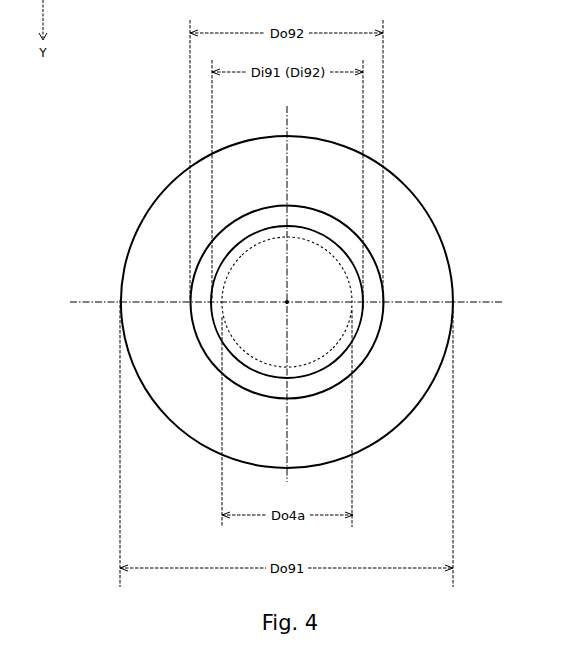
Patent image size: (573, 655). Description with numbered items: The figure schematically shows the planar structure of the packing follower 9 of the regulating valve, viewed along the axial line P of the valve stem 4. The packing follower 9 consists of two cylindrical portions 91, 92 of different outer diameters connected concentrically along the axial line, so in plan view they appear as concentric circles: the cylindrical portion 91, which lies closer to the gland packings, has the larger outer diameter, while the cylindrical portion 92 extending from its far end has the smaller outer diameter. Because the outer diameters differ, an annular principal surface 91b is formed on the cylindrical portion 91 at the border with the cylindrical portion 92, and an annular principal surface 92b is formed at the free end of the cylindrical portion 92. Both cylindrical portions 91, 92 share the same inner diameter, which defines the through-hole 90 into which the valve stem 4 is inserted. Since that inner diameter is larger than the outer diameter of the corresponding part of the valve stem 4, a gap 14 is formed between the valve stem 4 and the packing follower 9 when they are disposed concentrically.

The packing follower 9 is at (525, 114).
The cylindrical portion 91 is at (427, 213).
The principal surface 91b is at (430, 272).
The cylindrical portion 92 is at (372, 350).
The principal surface 92b is at (333, 233).
The valve stem 4 is at (212, 292).
The gap 14 is at (226, 280).
The through-hole 90 is at (358, 312).